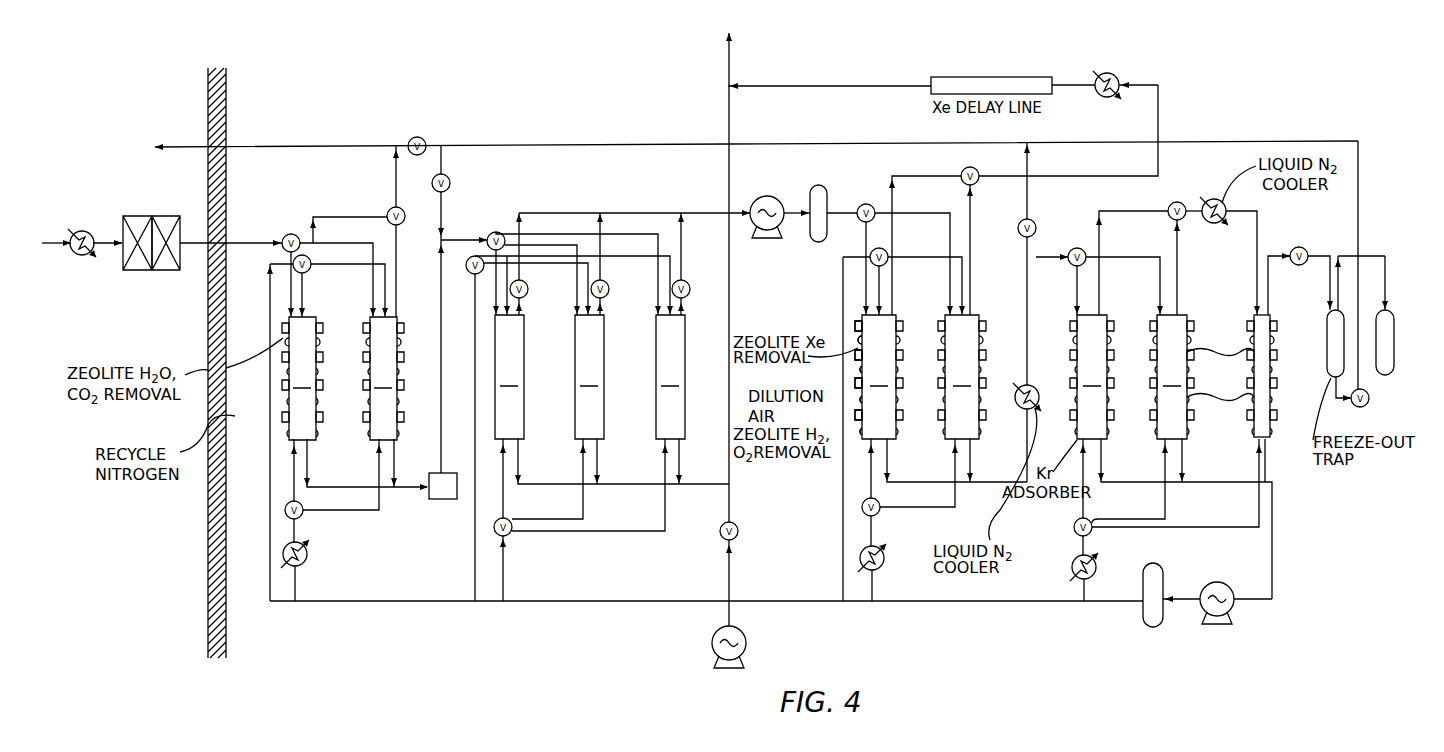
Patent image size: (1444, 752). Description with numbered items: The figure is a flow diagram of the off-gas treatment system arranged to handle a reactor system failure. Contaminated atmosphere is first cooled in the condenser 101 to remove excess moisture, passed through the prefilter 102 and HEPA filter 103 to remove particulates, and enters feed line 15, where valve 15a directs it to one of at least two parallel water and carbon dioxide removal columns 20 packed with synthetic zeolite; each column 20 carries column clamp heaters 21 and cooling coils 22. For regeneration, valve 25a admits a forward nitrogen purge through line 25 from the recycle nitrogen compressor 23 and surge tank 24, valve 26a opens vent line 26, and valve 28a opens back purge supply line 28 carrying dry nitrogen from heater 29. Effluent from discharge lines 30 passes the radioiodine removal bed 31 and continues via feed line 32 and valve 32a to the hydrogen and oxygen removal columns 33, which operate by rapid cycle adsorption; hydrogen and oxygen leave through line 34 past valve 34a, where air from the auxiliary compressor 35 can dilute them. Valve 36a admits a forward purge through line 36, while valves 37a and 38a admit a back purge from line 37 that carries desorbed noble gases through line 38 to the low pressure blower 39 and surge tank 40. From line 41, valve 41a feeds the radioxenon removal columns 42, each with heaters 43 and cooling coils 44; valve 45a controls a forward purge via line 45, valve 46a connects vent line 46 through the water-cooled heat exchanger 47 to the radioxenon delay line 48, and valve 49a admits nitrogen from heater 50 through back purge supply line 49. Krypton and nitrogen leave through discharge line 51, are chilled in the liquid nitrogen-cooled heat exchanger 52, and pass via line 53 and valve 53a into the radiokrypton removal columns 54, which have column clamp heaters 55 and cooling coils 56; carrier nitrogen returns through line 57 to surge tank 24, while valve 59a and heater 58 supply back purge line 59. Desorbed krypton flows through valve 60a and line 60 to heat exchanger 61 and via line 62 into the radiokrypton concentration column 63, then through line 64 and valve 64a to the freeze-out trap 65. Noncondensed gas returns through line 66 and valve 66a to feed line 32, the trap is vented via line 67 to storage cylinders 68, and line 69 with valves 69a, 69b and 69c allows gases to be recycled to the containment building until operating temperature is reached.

The condenser 101 is at (97, 221).
The prefilter 102 is at (143, 216).
The HEPA filter 103 is at (166, 216).
The feed line 15 is at (258, 243).
The valve 15a is at (291, 234).
The water and carbon dioxide removal column 20 is at (346, 378).
The column clamp heaters 21 is at (323, 329).
The cooling coils 22 is at (318, 346).
The line 25 is at (270, 416).
The valve 25a is at (310, 268).
The vent line 26 is at (345, 217).
The valve 26a is at (390, 209).
The back purge supply line 28 is at (371, 511).
The valve 28a is at (302, 514).
The heater 29 is at (306, 555).
The discharge lines 30 is at (340, 487).
The radioiodine removal bed 31 is at (446, 500).
The feed line 32 is at (470, 240).
The valve 32a is at (500, 232).
The hydrogen and oxygen removal column 33 is at (590, 377).
The line 34 is at (622, 484).
The valve 34a is at (739, 531).
The auxiliary compressor 35 is at (747, 643).
The line 36 is at (478, 560).
The valve 36a is at (470, 273).
The line 37 is at (506, 572).
The valve 37a is at (510, 534).
The line 38 is at (630, 213).
The valve 38a is at (690, 289).
The low pressure blower 39 is at (770, 197).
The surge tank 40 is at (818, 242).
The line 41 is at (848, 213).
The valve 41a is at (868, 204).
The radioxenon removal column 42 is at (924, 377).
The column clamp heaters 43 is at (858, 325).
The cooling coils 44 is at (858, 368).
The line 45 is at (843, 468).
The valve 45a is at (886, 252).
The vent line 46 is at (915, 176).
The valve 46a is at (975, 184).
The water-cooled heat exchanger 47 is at (1115, 75).
The radioxenon delay line 48 is at (1003, 77).
The back purge supply line 49 is at (932, 512).
The valve 49a is at (880, 512).
The heater 50 is at (884, 565).
The discharge line 51 is at (986, 483).
The liquid nitrogen-cooled heat exchanger 52 is at (1017, 398).
The line 53 is at (1029, 318).
The valve 53a is at (1077, 248).
The radiokrypton removal column 54 is at (1132, 377).
The column clamp heaters 55 is at (1220, 342).
The cooling coils 56 is at (1220, 388).
The line 57 is at (1215, 484).
The heater 58 is at (1072, 566).
The back purge line 59 is at (1116, 519).
The valve 59a is at (1074, 527).
The line 60 is at (1122, 215).
The valve 60a is at (1177, 202).
The liquid nitrogen-cooled heat exchanger 61 is at (1225, 206).
The line 62 is at (1260, 246).
The radiokrypton concentration column 63 is at (1263, 350).
The line 64 is at (1270, 266).
The valve 64a is at (1303, 247).
The freeze-out trap 65 is at (1328, 356).
The line 66 is at (1360, 186).
The valve 66a is at (1360, 407).
The line 67 is at (1372, 256).
The storage cylinders 68 is at (1385, 375).
The line 69 is at (1030, 172).
The valve 69a is at (1032, 221).
The valve 69b is at (449, 181).
The valve 69c is at (422, 139).
The recycle nitrogen compressor 23 is at (1229, 612).
The surge tank 24 is at (1143, 620).